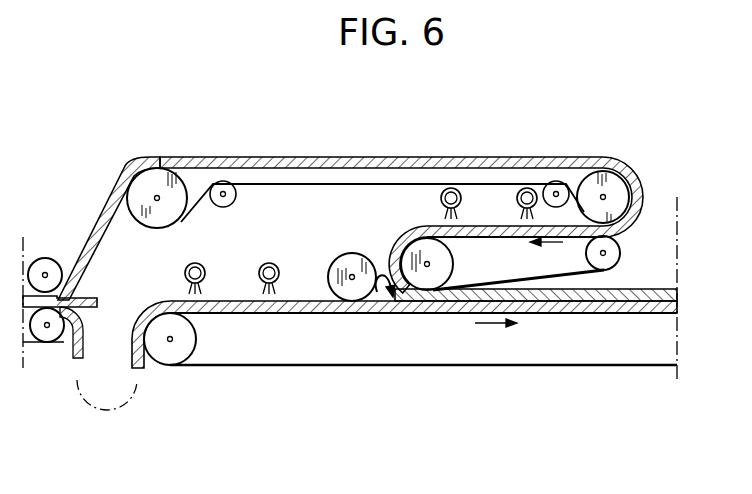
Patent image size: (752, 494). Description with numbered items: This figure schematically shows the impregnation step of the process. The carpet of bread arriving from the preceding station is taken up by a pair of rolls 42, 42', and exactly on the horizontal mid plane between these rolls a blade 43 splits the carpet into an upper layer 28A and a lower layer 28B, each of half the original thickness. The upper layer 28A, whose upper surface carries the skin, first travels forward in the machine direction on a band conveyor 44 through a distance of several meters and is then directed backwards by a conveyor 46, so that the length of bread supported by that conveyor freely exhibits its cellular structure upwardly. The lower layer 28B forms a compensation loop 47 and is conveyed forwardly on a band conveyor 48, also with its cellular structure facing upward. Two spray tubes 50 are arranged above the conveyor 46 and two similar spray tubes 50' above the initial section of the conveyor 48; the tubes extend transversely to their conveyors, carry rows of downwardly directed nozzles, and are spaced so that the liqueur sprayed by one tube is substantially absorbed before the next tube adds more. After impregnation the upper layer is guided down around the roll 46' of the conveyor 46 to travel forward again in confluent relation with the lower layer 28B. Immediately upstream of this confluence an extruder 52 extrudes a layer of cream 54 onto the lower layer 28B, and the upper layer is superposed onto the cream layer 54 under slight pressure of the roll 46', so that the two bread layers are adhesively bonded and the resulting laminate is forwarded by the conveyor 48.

The upper layer 28A is at (119, 179).
The lower layer 28B is at (140, 372).
The roll 42 is at (47, 361).
The roll 42' is at (49, 241).
The blade 43 is at (97, 298).
The band conveyor 44 is at (263, 182).
The conveyor 46 is at (523, 263).
The roll 46' is at (415, 244).
The compensation loop 47 is at (97, 414).
The band conveyor 48 is at (268, 366).
The spray tubes 50 is at (489, 174).
The spray tubes 50' is at (214, 266).
The extruder 52 is at (340, 268).
The layer of cream 54 is at (379, 288).